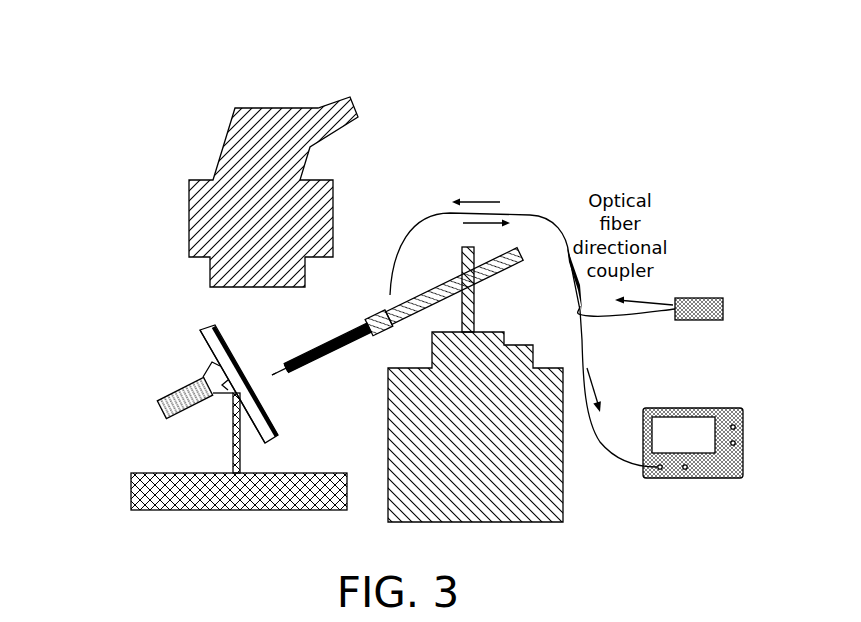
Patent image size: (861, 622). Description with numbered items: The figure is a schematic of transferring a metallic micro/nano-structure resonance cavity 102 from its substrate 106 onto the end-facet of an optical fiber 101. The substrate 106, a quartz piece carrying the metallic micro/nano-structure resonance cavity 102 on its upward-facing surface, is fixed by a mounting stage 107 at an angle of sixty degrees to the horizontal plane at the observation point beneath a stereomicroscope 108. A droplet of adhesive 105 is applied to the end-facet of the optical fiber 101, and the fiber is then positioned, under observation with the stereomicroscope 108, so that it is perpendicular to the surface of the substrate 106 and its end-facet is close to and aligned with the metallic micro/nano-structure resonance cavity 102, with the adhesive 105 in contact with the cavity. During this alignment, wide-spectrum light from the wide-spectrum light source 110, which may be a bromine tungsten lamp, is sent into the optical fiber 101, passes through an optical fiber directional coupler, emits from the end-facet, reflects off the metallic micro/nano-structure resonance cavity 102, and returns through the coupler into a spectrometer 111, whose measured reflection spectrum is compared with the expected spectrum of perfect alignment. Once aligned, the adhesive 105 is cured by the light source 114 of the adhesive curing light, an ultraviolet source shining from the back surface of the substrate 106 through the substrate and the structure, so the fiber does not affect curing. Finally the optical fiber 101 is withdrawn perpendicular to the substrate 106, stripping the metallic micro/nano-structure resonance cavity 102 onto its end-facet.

The optical fiber 101 is at (287, 370).
The metallic micro/nano-structure resonance cavity 102 is at (213, 322).
The adhesive 105 is at (275, 382).
The substrate 106 is at (203, 327).
The mounting stage 107 is at (226, 466).
The stereomicroscope 108 is at (286, 93).
The wide-spectrum light source 110 is at (698, 297).
The spectrometer 111 is at (672, 480).
The light source of adhesive curing light 114 is at (147, 382).